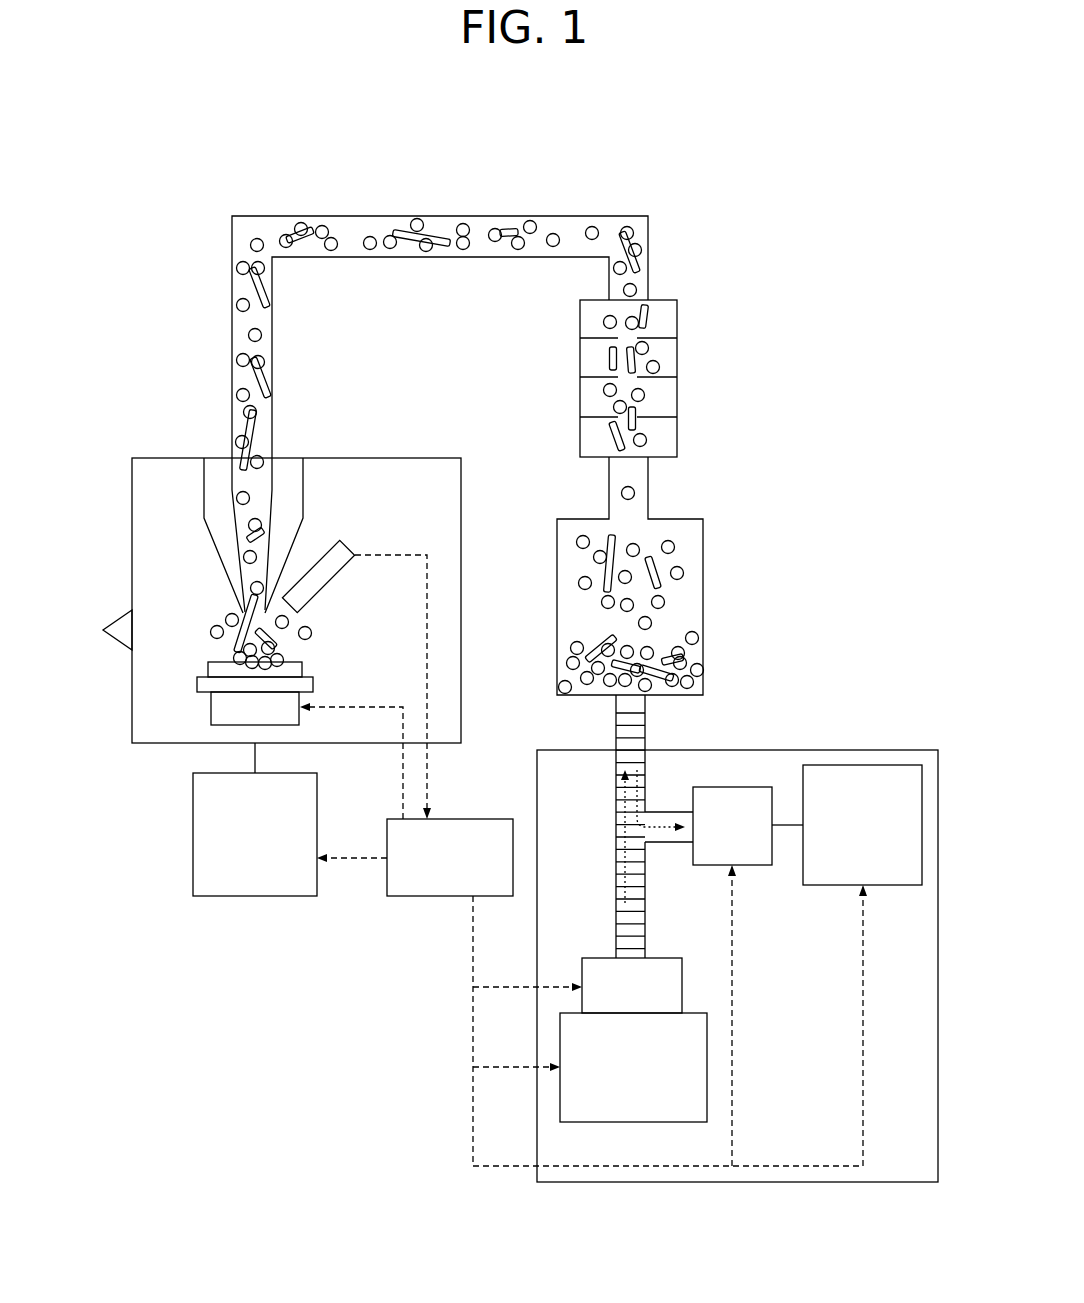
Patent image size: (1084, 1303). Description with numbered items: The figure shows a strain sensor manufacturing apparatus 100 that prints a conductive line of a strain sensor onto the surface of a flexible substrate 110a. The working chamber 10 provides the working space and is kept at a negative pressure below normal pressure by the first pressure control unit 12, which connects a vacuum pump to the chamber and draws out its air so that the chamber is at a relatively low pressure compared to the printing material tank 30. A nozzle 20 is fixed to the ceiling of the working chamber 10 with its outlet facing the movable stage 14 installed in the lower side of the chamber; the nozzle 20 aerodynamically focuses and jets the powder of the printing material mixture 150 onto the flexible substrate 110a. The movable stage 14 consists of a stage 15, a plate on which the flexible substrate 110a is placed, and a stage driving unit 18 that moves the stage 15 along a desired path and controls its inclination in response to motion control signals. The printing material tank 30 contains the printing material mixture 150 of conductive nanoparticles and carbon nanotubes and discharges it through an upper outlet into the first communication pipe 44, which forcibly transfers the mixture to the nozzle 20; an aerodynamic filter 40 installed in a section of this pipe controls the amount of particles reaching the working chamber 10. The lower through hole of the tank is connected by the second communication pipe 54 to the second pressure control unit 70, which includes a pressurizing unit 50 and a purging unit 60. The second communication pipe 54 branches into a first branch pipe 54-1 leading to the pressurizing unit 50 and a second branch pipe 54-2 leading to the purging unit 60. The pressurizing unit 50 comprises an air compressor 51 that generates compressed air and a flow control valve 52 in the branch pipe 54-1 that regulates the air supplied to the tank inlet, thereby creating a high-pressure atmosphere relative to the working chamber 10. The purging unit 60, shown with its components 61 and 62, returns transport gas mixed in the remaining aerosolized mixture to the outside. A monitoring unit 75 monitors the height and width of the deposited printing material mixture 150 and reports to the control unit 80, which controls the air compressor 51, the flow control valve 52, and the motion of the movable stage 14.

The strain sensor manufacturing apparatus 100 is at (576, 137).
The working chamber 10 is at (165, 457).
The first pressure control unit 12 is at (255, 897).
The movable stage 14 is at (92, 668).
The stage 15 is at (197, 684).
The stage driving unit 18 is at (211, 707).
The nozzle 20 is at (228, 562).
The printing material tank 30 is at (703, 603).
The aerodynamic filter 40 is at (677, 390).
The first communication pipe 44 is at (440, 258).
The pressurizing unit 50 is at (401, 993).
The air compressor 51 is at (560, 1097).
The flow control valve 52 is at (582, 1000).
The second communication pipe 54 is at (616, 722).
The second-1 communication pipe 54-1 is at (616, 917).
The second-2 communication pipe 54-2 is at (664, 812).
The purging unit 60 is at (837, 700).
The temperature controller 61 is at (827, 765).
The heat exchanger 62 is at (760, 787).
The second pressure control unit 70 is at (738, 1182).
The monitoring unit 75 is at (330, 585).
The control unit 80 is at (420, 897).
The flexible substrate 110a is at (210, 668).
The printing material mixture 150 is at (703, 655).